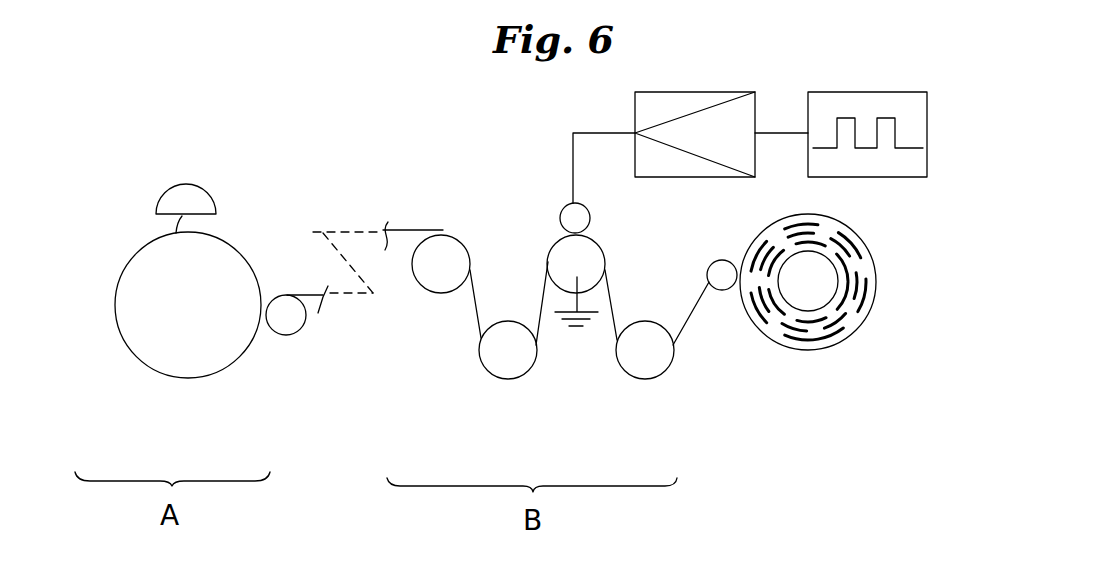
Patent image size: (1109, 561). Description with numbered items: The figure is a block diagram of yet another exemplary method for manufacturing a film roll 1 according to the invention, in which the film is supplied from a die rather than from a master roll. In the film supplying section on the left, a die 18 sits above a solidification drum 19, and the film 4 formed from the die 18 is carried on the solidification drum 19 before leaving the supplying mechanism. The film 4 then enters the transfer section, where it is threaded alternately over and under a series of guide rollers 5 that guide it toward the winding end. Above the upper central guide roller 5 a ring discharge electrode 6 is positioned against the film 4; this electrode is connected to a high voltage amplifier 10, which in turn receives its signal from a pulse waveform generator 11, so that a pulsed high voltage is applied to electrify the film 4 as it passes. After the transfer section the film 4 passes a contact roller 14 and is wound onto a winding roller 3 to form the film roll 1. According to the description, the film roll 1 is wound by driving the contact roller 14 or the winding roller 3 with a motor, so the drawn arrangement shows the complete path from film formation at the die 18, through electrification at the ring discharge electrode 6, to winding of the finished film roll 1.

The film roll 1 is at (782, 348).
The winding roller 3 is at (830, 305).
The film 4 is at (187, 220).
The guide roller 5 is at (437, 257).
The ring discharge electrode 6 is at (567, 202).
The high voltage amplifier 10 is at (721, 120).
The pulse waveform generator 11 is at (867, 121).
The contact roller 14 is at (725, 275).
The die 18 is at (178, 202).
The solidification drum 19 is at (188, 380).